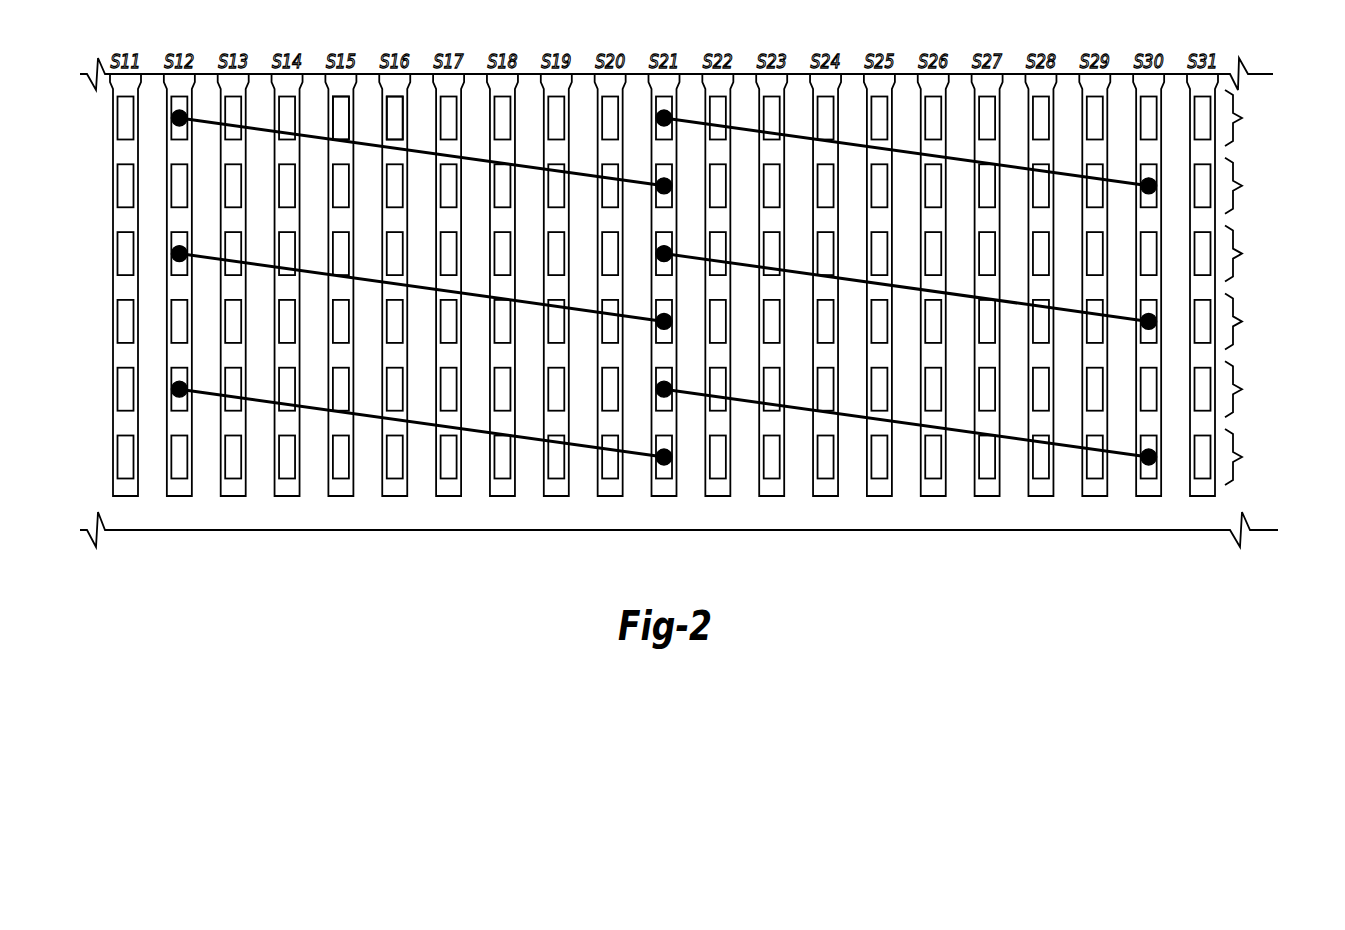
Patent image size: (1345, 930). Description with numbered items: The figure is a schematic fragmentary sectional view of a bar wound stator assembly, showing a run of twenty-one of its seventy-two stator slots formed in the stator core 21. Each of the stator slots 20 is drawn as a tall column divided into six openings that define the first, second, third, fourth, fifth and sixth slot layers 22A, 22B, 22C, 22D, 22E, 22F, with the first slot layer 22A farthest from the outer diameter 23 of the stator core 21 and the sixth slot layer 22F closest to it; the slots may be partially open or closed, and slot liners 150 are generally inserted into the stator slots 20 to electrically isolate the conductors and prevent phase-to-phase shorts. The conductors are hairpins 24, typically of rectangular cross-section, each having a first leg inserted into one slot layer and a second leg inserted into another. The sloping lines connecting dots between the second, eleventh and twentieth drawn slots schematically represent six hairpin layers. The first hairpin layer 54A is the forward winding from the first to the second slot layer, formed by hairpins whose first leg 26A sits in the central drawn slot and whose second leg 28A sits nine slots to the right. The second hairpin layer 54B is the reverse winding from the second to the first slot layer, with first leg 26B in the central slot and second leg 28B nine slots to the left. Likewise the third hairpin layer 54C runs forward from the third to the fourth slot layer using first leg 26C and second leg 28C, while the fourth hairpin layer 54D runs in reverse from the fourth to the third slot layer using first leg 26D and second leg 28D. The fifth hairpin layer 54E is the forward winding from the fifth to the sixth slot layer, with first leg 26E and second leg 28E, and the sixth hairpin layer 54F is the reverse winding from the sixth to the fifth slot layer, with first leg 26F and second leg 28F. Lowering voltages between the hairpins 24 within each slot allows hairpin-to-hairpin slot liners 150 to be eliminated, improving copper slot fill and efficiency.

The stator slots 20 is at (442, 488).
The stator core 21 is at (1213, 504).
The outer diameter 23 is at (1075, 531).
The hairpins 24 is at (341, 113).
The slot liners 150 is at (122, 430).
The first slot layer 22A is at (1251, 118).
The second slot layer 22B is at (1251, 186).
The third slot layer 22C is at (1251, 254).
The fourth slot layer 22D is at (1251, 321).
The fifth slot layer 22E is at (1251, 389).
The sixth slot layer 22F is at (1251, 457).
The first leg 26A is at (660, 117).
The first leg 26B is at (656, 185).
The first leg 26C is at (668, 250).
The first leg 26D is at (657, 325).
The first leg 26E is at (670, 393).
The first leg 26F is at (663, 462).
The second leg 28A is at (1158, 183).
The second leg 28B is at (172, 118).
The second leg 28C is at (1157, 322).
The second leg 28D is at (172, 254).
The second leg 28E is at (1148, 460).
The second leg 28F is at (172, 390).
The first hairpin layer 54A is at (1005, 166).
The second hairpin layer 54B is at (313, 134).
The third hairpin layer 54C is at (1110, 317).
The fourth hairpin layer 54D is at (214, 258).
The fifth hairpin layer 54E is at (853, 417).
The sixth hairpin layer 54F is at (260, 402).